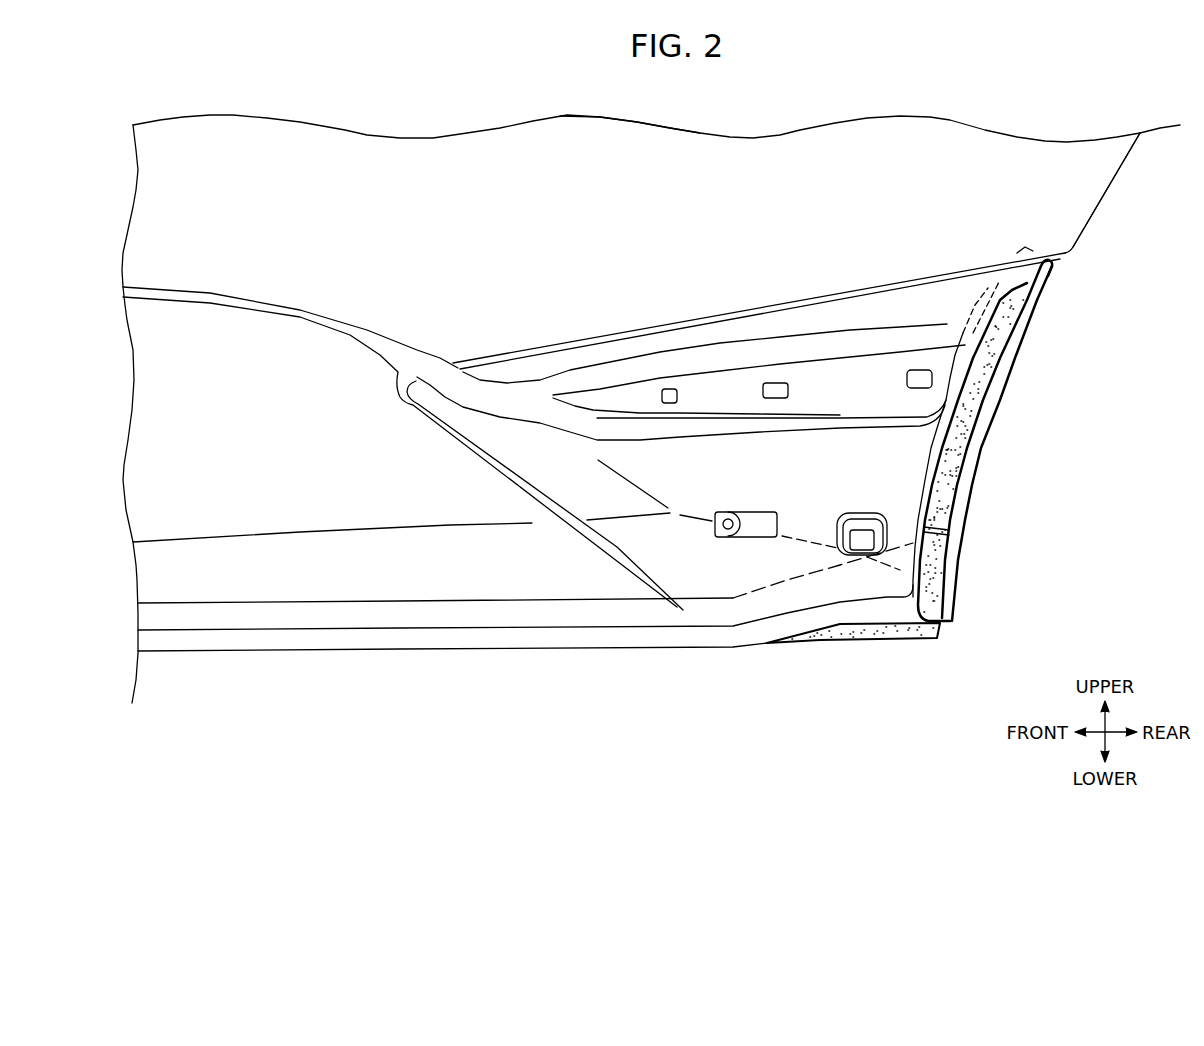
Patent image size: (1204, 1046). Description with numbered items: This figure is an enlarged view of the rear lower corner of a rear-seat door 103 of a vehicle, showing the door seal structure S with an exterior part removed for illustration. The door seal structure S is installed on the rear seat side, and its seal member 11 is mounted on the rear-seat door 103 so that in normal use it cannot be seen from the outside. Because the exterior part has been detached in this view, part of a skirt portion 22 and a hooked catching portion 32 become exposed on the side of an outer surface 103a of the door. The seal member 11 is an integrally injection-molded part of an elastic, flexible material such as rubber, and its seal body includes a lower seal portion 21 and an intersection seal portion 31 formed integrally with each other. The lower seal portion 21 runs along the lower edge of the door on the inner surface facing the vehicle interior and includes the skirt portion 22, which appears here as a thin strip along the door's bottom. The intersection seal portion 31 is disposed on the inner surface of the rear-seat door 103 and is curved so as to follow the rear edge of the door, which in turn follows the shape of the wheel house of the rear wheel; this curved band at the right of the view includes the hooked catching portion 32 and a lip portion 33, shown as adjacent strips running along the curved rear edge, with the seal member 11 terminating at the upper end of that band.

The rear-seat door 103 is at (462, 195).
The outer surface of the door 103a is at (622, 170).
The door seal structure S is at (1116, 227).
The seal member 11 is at (1055, 275).
The intersection seal portion 31 is at (1012, 367).
The hooked catching portion 32 is at (954, 452).
The lip portion 33 is at (962, 507).
The lower seal portion 21 is at (482, 634).
The skirt portion 22 is at (855, 630).